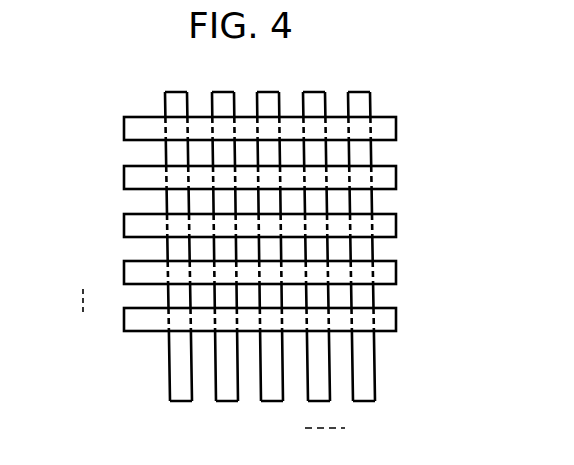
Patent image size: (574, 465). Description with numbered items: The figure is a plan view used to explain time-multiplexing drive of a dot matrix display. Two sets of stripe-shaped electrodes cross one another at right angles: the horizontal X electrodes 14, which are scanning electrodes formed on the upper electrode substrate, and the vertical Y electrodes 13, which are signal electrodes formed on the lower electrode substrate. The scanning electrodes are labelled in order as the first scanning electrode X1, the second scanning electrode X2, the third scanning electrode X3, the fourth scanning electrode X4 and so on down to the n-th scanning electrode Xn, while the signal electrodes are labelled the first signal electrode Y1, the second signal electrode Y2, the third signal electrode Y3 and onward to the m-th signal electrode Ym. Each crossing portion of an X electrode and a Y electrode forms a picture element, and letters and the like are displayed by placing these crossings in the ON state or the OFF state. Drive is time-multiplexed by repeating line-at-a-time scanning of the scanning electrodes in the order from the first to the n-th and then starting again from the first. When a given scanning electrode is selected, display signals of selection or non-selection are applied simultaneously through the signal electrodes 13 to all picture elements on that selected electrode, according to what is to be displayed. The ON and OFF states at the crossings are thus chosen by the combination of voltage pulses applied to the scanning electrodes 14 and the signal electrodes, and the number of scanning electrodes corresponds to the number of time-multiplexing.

The X electrodes 14 is at (267, 222).
The Y electrodes 13 is at (315, 267).
The first scanning electrode X1 is at (233, 132).
The second scanning electrode X2 is at (233, 181).
The third scanning electrode X3 is at (233, 230).
The fourth scanning electrode X4 is at (233, 276).
The n-th scanning electrode Xn is at (233, 327).
The first signal electrode Y1 is at (179, 267).
The second signal electrode Y2 is at (224, 267).
The third signal electrode Y3 is at (270, 267).
The m-th signal electrode Ym is at (366, 267).